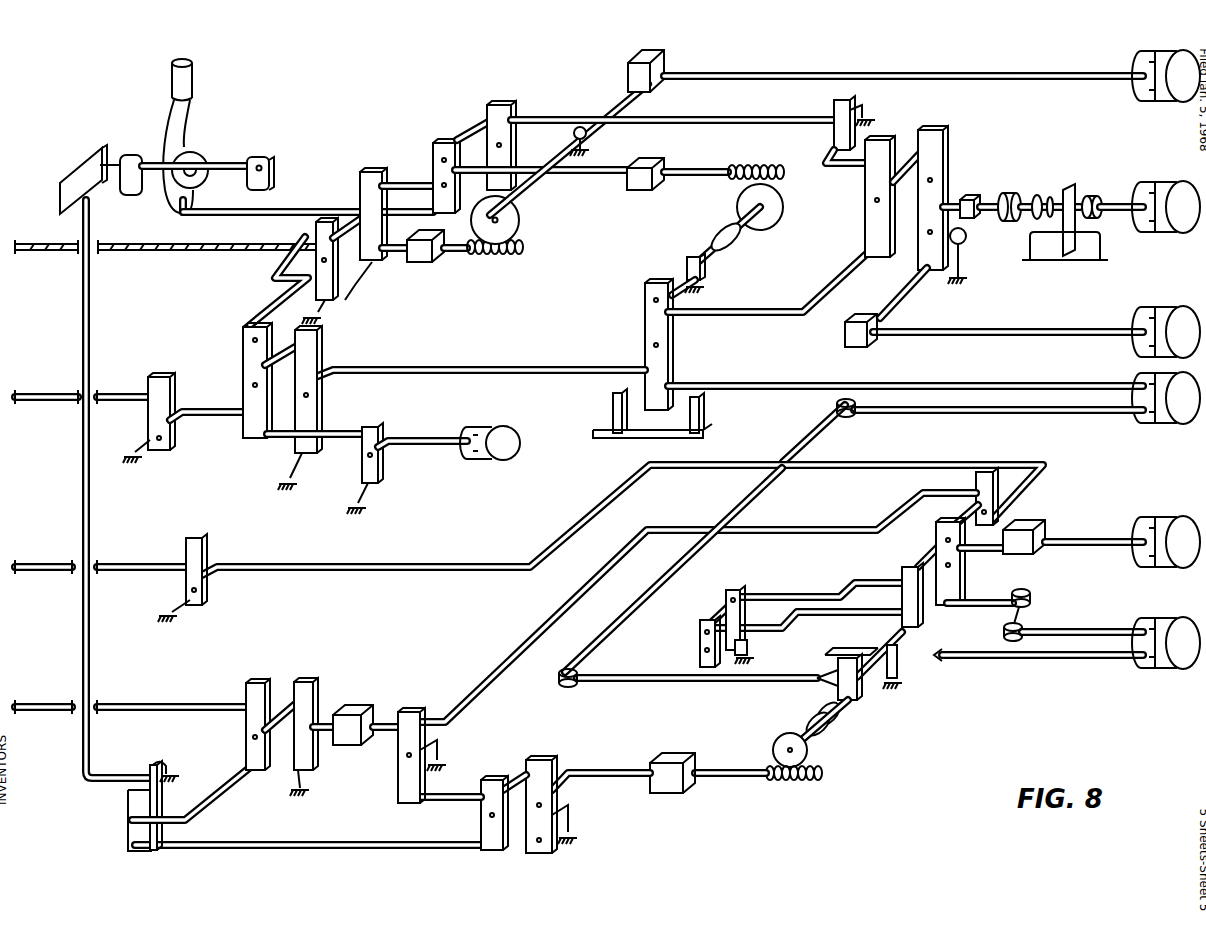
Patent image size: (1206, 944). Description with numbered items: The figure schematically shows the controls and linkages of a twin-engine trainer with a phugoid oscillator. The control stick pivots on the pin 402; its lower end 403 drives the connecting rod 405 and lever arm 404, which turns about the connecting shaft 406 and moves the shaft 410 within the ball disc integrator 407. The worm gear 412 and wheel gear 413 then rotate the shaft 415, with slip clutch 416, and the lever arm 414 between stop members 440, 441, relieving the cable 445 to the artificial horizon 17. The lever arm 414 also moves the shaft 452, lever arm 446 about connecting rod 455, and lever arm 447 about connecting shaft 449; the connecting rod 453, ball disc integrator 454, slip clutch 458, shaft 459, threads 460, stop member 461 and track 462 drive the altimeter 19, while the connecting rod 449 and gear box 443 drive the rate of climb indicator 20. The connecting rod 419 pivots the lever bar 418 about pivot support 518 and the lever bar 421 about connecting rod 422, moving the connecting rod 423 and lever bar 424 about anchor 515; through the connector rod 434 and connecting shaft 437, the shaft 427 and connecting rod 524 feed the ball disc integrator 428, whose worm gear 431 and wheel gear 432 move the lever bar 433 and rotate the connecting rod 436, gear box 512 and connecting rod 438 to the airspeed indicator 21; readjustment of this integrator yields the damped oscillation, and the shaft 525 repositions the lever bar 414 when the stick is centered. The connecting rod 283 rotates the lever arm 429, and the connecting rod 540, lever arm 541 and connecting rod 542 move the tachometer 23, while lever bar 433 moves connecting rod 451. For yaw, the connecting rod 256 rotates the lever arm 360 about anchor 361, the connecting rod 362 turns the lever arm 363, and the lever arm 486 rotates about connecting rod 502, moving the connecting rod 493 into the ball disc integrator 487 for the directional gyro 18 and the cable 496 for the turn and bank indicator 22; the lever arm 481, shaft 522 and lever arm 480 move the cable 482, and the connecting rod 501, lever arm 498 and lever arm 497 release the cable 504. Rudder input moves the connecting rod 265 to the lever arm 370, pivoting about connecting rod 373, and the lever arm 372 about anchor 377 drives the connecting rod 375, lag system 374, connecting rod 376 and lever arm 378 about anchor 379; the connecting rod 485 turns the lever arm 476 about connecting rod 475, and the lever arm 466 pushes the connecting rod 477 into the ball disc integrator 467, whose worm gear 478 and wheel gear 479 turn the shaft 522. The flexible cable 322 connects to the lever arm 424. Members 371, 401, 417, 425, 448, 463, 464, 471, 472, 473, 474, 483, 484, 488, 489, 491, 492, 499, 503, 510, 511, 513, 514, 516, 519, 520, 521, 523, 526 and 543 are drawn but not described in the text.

The artificial horizon 17 is at (1168, 425).
The directional gyro 18 is at (1170, 518).
The altimeter 19 is at (1170, 180).
The rate of climb indicator 20 is at (1168, 308).
The airspeed indicator 21 is at (1148, 56).
The turn and bank indicator 22 is at (1166, 618).
The tachometer 23 is at (503, 424).
The connecting rod 256 is at (60, 564).
The connecting rod 265 is at (62, 704).
The connecting rod 283 is at (60, 394).
The flexible cable 322 is at (58, 254).
The lever arm 360 is at (192, 538).
The anchor 361 is at (168, 606).
The connecting rod 362 is at (1020, 466).
The lever arm 363 is at (985, 470).
The lever arm 370 is at (240, 700).
The bracket plate 371 is at (262, 682).
The lever arm 372 is at (305, 680).
The connecting rod 373 is at (200, 820).
The lag system 374 is at (410, 712).
The connecting rod 375 is at (345, 712).
The connecting rod 376 is at (375, 745).
The anchor 377 is at (305, 790).
The lever arm 378 is at (398, 805).
The anchor 379 is at (445, 758).
The lever handle 401 is at (198, 112).
The pin 402 is at (168, 190).
The lower end of the control stick 403 is at (180, 215).
The lever arm 404 is at (432, 148).
The connecting rod 405 is at (255, 216).
The connecting shaft 406 is at (470, 125).
The ball disc integrator 407 is at (652, 192).
The shaft 410 is at (595, 176).
The worm gear 412 is at (752, 165).
The wheel gear 413 is at (784, 205).
The lever arm 414 is at (643, 298).
The shaft 415 is at (745, 225).
The slip clutch 416 is at (710, 234).
The bearing plate 417 is at (685, 262).
The lever bar 418 is at (328, 382).
The connecting rod 419 is at (485, 368).
The lever bar 421 is at (242, 352).
The connecting rod 422 is at (215, 418).
The connecting rod 423 is at (272, 278).
The lever bar 424 is at (300, 235).
The bracket plate 425 is at (318, 352).
The shaft 427 is at (410, 262).
The ball disc integrator 428 is at (425, 262).
The lever arm 429 is at (172, 392).
The worm gear 431 is at (515, 252).
The wheel gear 432 is at (520, 222).
The lever bar 433 is at (490, 112).
The connecting rod 434 is at (372, 172).
The connecting rod 436 is at (540, 190).
The connecting shaft 437 is at (350, 268).
The connecting rod 438 is at (850, 72).
The stop member 440 is at (610, 418).
The stop member 441 is at (705, 420).
The gear box 443 is at (875, 342).
The cable 445 is at (1048, 376).
The lever arm 446 is at (863, 238).
The lever arm 447 is at (950, 135).
The rod 448 is at (905, 160).
The connecting rod 449 is at (898, 290).
The connecting rod 451 is at (722, 118).
The shaft 452 is at (830, 103).
The connecting rod 453 is at (963, 198).
The ball disc integrator 454 is at (1005, 190).
The connecting rod 455 is at (845, 152).
The slip clutch 458 is at (1036, 194).
The shaft 459 is at (1048, 220).
The threads 460 is at (1092, 195).
The stop member 461 is at (1068, 256).
The track 462 is at (1102, 252).
The shaft 463 is at (1045, 194).
The rod 464 is at (512, 782).
The lever arm 466 is at (540, 758).
The ball disc integrator 467 is at (672, 758).
The rod 471 is at (243, 162).
The plate 472 is at (66, 172).
The rod 473 is at (90, 320).
The bracket 474 is at (126, 800).
The connecting rod 475 is at (318, 849).
The lever arm 476 is at (486, 852).
The connecting rod 477 is at (620, 770).
The worm gear 478 is at (808, 782).
The wheel gear 479 is at (810, 752).
The lever arm 480 is at (815, 688).
The lever arm 481 is at (922, 622).
The cable 482 is at (735, 505).
The bracket 483 is at (836, 655).
The rod 484 is at (882, 680).
The connecting rod 485 is at (446, 800).
The lever arm 486 is at (935, 520).
The ball disc integrator 487 is at (1036, 528).
The rod 488 is at (1000, 604).
The roller 489 is at (1032, 594).
The rod 491 is at (840, 530).
The bracket plate 492 is at (930, 555).
The connecting rod 493 is at (985, 552).
The cable 496 is at (1092, 630).
The lever arm 497 is at (698, 632).
The lever arm 498 is at (740, 590).
The rod 499 is at (722, 612).
The connecting rod 501 is at (795, 594).
The connecting rod 502 is at (835, 583).
The bearing bracket 503 is at (752, 648).
The cable 504 is at (1068, 660).
The roller 510 is at (580, 690).
The roller 511 is at (855, 418).
The gear box 512 is at (668, 62).
The bracket 513 is at (138, 152).
The lug 514 is at (270, 160).
The anchor 515 is at (325, 320).
The bearing 516 is at (590, 137).
The pivot support 518 is at (278, 485).
The ground mount 519 is at (176, 776).
The ground mount 520 is at (575, 832).
The bearing bracket 521 is at (905, 682).
The shaft 522 is at (1110, 540).
The rod 523 is at (728, 778).
The connecting rod 524 is at (455, 252).
The shaft 525 is at (690, 178).
The roller 526 is at (968, 240).
The connecting rod 540 is at (275, 438).
The lever arm 541 is at (380, 465).
The connecting rod 542 is at (440, 440).
The ground mount 543 is at (368, 508).